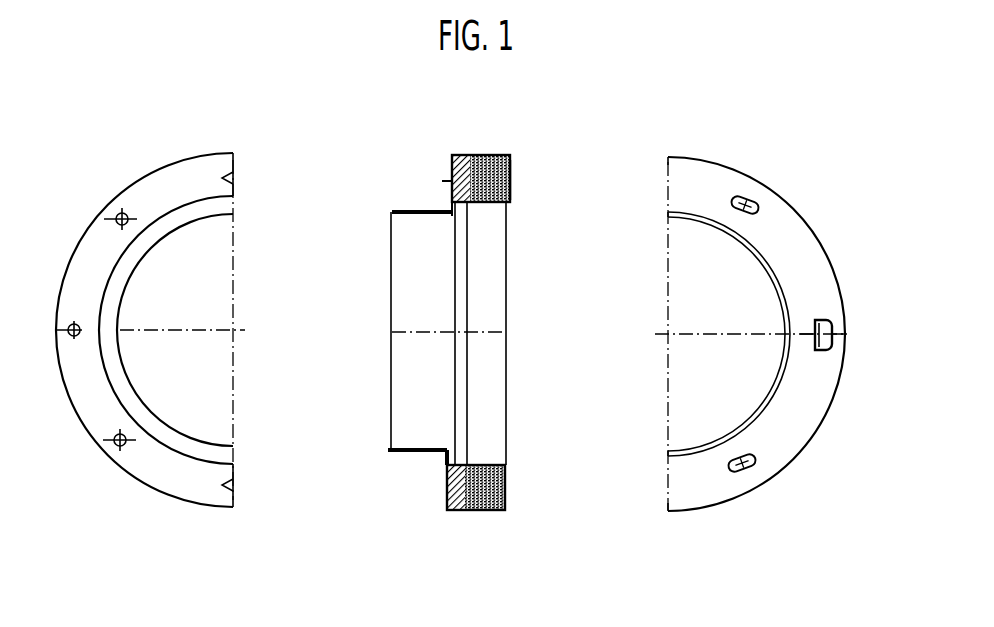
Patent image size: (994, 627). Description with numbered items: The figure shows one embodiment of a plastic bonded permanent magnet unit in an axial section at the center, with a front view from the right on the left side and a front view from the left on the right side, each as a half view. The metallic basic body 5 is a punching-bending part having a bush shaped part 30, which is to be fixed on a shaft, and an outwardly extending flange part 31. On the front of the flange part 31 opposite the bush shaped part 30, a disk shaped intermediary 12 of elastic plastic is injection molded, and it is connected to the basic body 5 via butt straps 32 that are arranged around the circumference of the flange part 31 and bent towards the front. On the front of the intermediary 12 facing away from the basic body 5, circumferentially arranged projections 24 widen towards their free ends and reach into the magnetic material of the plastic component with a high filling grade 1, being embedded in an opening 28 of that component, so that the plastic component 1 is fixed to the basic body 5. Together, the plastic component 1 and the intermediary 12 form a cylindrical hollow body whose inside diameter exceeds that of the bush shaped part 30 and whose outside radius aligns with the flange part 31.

The plastic component with a high filling grade 1 is at (185, 183).
The basic body 5 is at (170, 236).
The disk shaped intermediary 12 is at (455, 510).
The projections 24 is at (118, 212).
The opening 28 is at (510, 195).
The bush shaped part 30 is at (423, 218).
The flange part 31 is at (452, 158).
The butt straps 32 is at (747, 205).